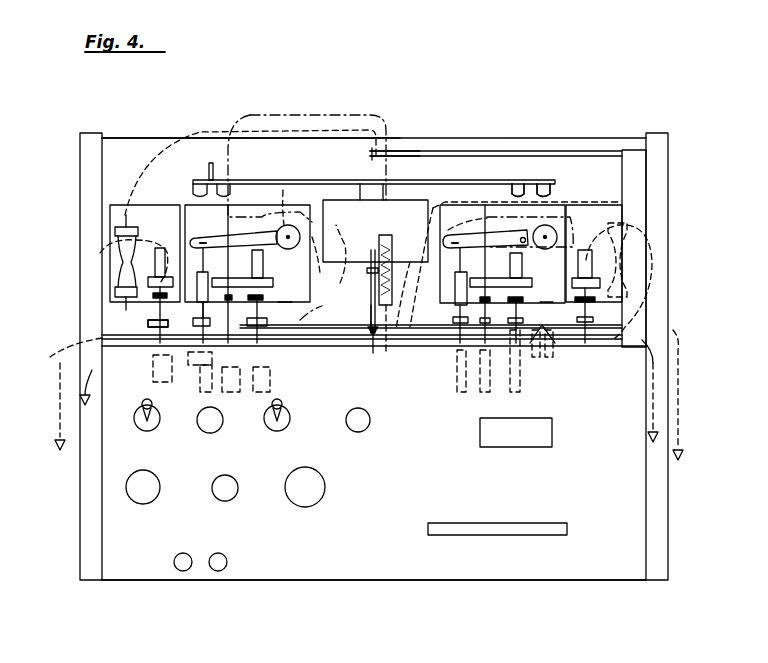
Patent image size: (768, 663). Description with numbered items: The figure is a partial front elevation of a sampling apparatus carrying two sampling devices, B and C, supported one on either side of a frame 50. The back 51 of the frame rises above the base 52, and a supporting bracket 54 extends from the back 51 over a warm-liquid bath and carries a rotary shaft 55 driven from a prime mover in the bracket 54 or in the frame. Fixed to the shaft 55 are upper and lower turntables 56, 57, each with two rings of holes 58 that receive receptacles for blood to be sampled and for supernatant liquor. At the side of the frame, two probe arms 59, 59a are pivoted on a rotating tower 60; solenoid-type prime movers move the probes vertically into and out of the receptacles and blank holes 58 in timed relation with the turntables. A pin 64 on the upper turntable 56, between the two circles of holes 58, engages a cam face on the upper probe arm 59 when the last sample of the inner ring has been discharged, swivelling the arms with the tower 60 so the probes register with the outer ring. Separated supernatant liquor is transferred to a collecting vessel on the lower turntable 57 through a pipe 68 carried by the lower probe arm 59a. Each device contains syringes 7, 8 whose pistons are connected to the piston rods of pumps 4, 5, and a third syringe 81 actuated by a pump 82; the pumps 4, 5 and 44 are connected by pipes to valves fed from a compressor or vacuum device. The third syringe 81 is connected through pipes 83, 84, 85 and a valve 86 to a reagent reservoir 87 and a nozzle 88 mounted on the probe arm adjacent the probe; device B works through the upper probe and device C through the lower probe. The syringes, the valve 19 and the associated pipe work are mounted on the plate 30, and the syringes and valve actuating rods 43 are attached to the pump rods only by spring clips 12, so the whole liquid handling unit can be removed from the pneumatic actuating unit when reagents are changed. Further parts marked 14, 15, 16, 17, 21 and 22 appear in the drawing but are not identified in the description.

The pump 4 is at (272, 373).
The pump 5 is at (240, 375).
The syringe 7 is at (259, 262).
The syringe 8 is at (230, 262).
The spring clips 12 is at (162, 325).
The actuating rod 14 is at (205, 252).
The lever 15 is at (228, 217).
The conveyor path 16 is at (356, 118).
The support bracket 17 is at (386, 176).
The valve 19 is at (288, 250).
The guide 21 is at (317, 314).
The direction of movement 22 is at (92, 397).
The plate 30 is at (281, 190).
The valve actuating rods 43 is at (200, 252).
The pump 44 is at (196, 380).
The frame 50 is at (612, 541).
The back 51 is at (125, 146).
The base 52 is at (614, 580).
The supporting bracket 54 is at (398, 212).
The rotary shaft 55 is at (372, 300).
The upper turntable 56 is at (518, 183).
The lower turntable 57 is at (340, 333).
The holes 58 is at (543, 183).
The upper probe arm 59 is at (573, 153).
The lower probe arm 59a is at (565, 339).
The rotating tower 60 is at (632, 188).
The pin 64 is at (208, 170).
The pipe 68 is at (340, 283).
The third syringe 81 is at (160, 278).
The pump 82 is at (153, 372).
The pipe 83 is at (140, 236).
The pipe 84 is at (63, 353).
The pipe 85 is at (250, 115).
The valve 86 is at (100, 270).
The reagent reservoir 87 is at (682, 415).
The nozzle 88 is at (370, 156).